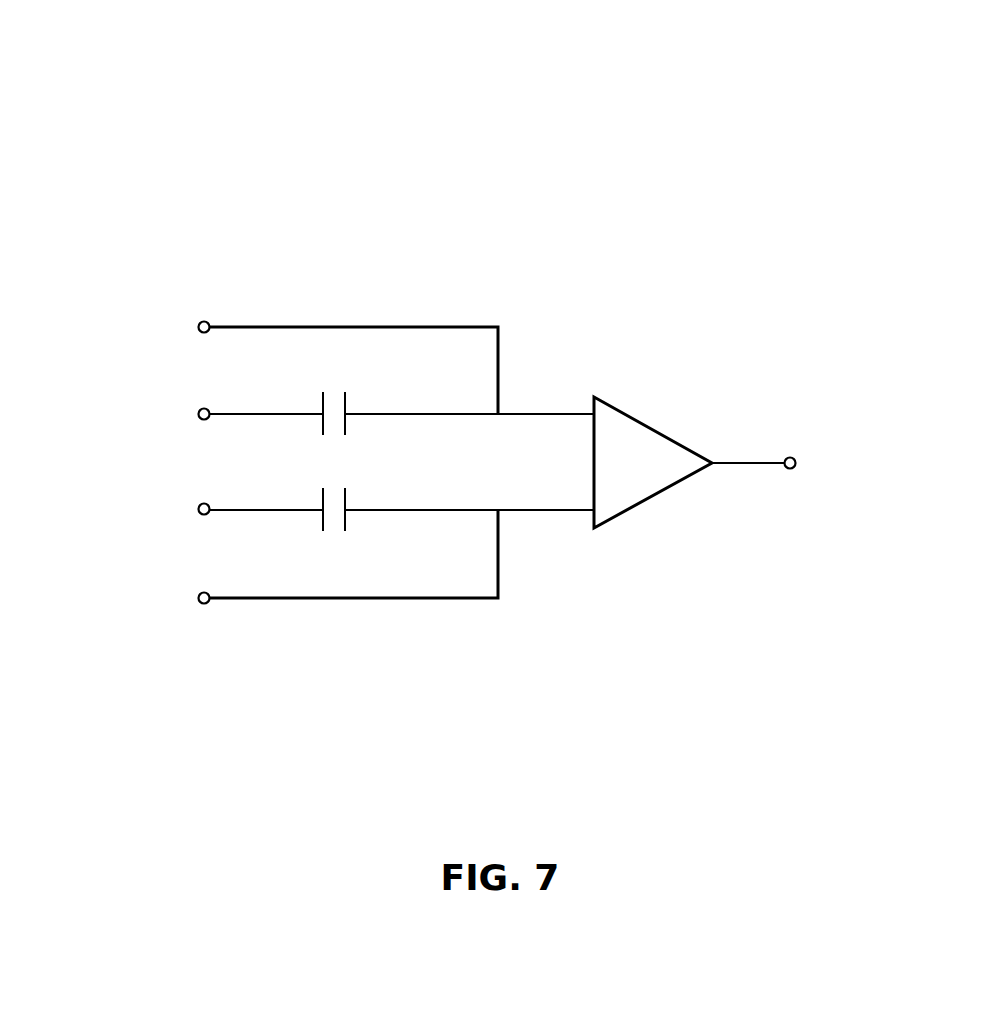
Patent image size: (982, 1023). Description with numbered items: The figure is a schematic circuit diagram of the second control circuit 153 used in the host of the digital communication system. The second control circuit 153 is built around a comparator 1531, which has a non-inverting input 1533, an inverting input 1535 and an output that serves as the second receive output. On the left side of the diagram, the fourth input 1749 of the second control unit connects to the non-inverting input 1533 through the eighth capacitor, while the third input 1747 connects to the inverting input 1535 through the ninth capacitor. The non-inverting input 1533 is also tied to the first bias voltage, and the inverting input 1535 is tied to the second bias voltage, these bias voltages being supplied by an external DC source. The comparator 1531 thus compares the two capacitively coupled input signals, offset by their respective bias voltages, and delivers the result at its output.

The second control circuit 153 is at (382, 146).
The comparator 1531 is at (645, 423).
The non-inverting input 1533 is at (567, 414).
The inverting input 1535 is at (565, 510).
The fourth input 1749 is at (196, 410).
The third input 1747 is at (196, 503).